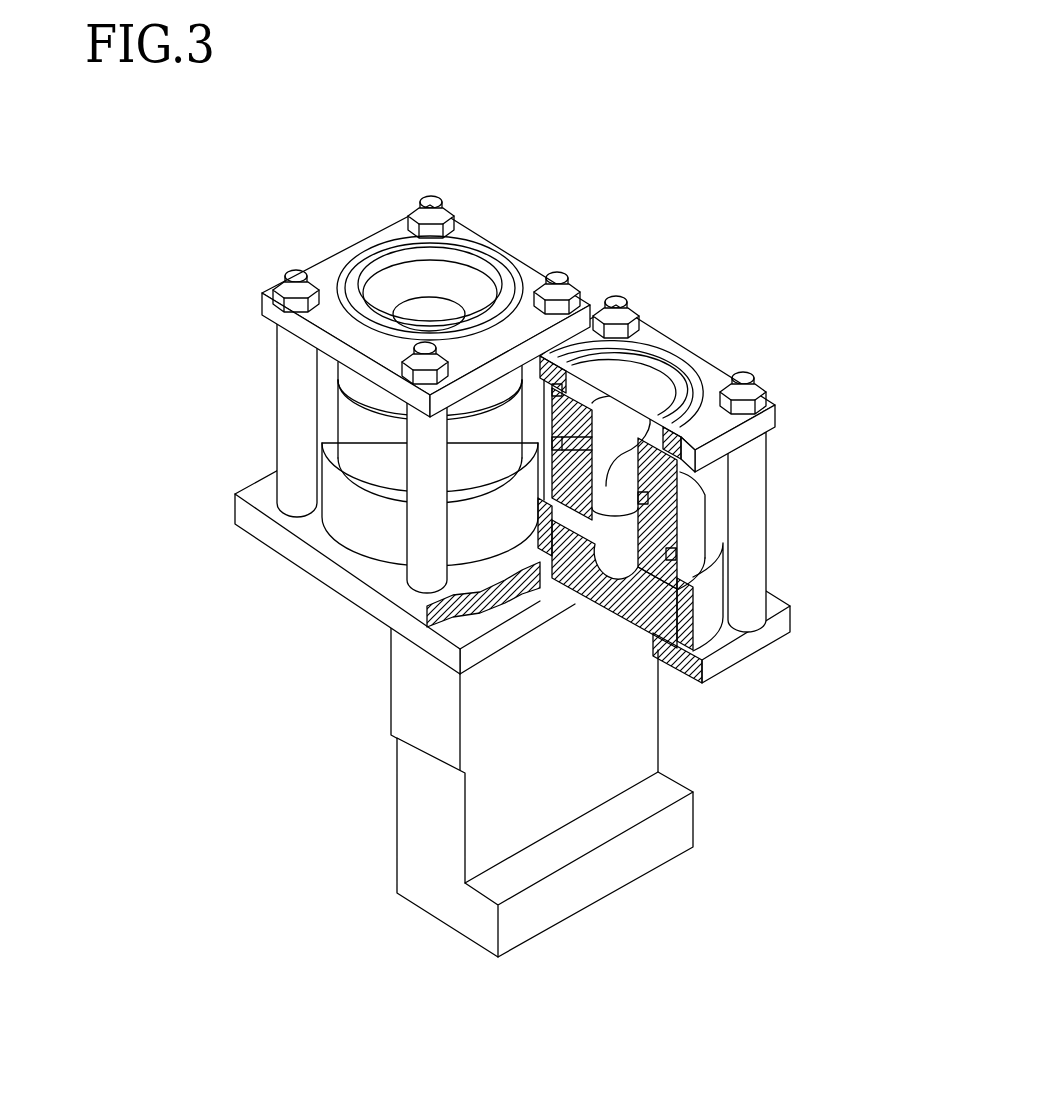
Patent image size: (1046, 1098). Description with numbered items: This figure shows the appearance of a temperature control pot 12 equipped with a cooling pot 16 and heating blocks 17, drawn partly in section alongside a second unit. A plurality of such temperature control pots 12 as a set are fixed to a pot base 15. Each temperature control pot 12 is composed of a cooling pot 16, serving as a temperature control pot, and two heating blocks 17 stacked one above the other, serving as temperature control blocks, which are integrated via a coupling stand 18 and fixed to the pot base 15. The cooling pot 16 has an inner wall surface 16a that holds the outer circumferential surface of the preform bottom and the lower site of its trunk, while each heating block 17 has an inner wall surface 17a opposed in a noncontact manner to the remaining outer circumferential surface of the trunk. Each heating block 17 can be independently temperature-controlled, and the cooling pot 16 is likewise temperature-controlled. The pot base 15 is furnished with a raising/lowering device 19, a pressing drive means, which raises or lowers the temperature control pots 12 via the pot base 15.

The temperature control pot 12 is at (330, 370).
The pot base 15 is at (302, 553).
The cooling pot 16 is at (345, 495).
The inner wall surface 16a is at (585, 600).
The heating block 17 is at (355, 428).
The inner wall surface 17a is at (608, 432).
The coupling stand 18 is at (527, 272).
The raising/lowering device 19 is at (409, 810).